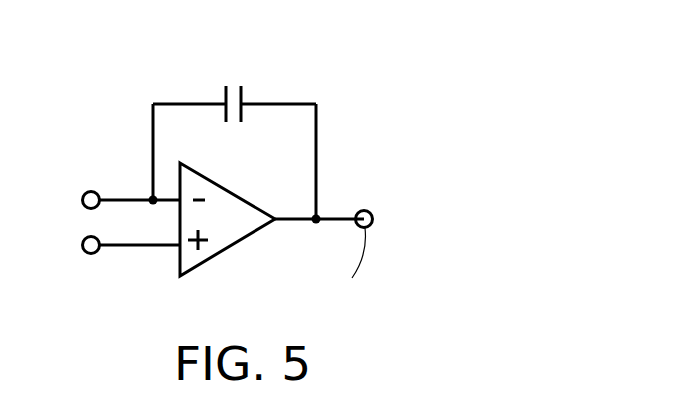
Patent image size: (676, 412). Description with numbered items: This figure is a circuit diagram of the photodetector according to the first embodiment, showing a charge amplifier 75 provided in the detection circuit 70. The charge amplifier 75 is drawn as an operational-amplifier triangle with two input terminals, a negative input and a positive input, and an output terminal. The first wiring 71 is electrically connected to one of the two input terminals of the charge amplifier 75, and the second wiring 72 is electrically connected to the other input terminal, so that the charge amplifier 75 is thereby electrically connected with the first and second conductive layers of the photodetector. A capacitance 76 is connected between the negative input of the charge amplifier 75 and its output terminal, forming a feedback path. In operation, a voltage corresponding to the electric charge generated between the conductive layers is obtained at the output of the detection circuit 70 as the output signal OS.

The detection circuit 70 is at (493, 107).
The first wiring 71 is at (113, 198).
The second wiring 72 is at (117, 247).
The charge amplifier 75 is at (345, 143).
The capacitance 76 is at (249, 93).